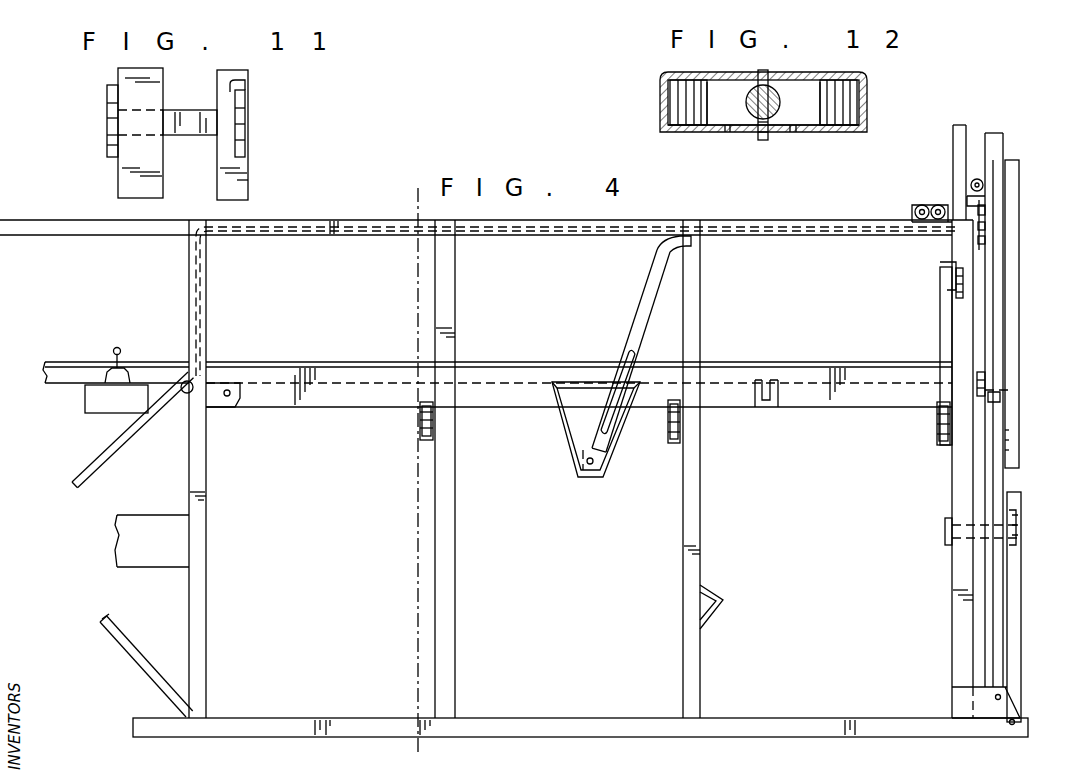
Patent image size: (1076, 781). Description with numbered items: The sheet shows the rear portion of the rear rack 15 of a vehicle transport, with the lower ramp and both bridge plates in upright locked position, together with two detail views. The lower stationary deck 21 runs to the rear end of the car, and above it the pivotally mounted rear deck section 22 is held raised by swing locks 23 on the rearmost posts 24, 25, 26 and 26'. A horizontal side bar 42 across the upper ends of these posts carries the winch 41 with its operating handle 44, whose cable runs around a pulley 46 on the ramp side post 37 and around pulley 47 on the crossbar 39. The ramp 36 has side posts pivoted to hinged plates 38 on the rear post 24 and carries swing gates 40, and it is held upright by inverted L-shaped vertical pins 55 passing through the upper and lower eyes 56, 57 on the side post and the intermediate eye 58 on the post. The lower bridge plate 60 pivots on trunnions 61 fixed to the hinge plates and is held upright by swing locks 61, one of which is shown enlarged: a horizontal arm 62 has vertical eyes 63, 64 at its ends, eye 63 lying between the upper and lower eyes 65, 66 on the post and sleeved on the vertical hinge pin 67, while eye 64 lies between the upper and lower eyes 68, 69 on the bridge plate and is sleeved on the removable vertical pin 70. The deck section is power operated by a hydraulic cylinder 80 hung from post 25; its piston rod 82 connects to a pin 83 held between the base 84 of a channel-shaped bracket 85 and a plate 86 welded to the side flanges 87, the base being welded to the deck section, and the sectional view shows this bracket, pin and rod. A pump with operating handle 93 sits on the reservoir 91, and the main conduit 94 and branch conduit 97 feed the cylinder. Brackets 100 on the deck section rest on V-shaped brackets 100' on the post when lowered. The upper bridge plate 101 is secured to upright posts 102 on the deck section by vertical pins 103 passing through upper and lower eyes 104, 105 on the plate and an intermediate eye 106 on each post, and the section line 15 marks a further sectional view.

In FIG. 4, the rear rack 15 is at (418, 185).
In FIG. 4, the lower stationary deck 21 is at (578, 712).
In FIG. 4, the rear deck section 22 is at (396, 402).
In FIG. 4, the swing lock 23 is at (420, 428).
In FIG. 11, the rear post 24 is at (130, 75).
In FIG. 4, the rear post 24 is at (958, 673).
In FIG. 4, the post 25 is at (718, 667).
In FIG. 4, the post 26 is at (464, 469).
In FIG. 4, the post 26' is at (217, 469).
In FIG. 4, the ramp 36 is at (984, 572).
In FIG. 4, the side post 37 is at (1000, 492).
In FIG. 4, the hinged plate 38 is at (965, 728).
In FIG. 4, the crossbar 39 is at (1002, 398).
In FIG. 4, the swing gate 40 is at (1019, 455).
In FIG. 4, the winch 41 is at (912, 215).
In FIG. 4, the horizontal side bar 42 is at (926, 232).
In FIG. 4, the operating handle 44 is at (918, 207).
In FIG. 4, the pulley 46 is at (977, 180).
In FIG. 4, the pulley 47 is at (986, 376).
In FIG. 4, the inverted L-shaped vertical pin 55 is at (971, 183).
In FIG. 4, the upper eye 56 is at (985, 219).
In FIG. 4, the lower eye 57 is at (985, 241).
In FIG. 4, the intermediate eye 58 is at (980, 228).
In FIG. 11, the bridge plate 60 is at (248, 82).
In FIG. 4, the bridge plate 60 is at (1020, 666).
In FIG. 11, the trunnion / swing lock 61 is at (186, 108).
In FIG. 4, the trunnion / swing lock 61 is at (965, 525).
In FIG. 11, the horizontal arm 62 is at (197, 136).
In FIG. 11, the vertical eye 63 is at (107, 121).
In FIG. 11, the vertical eye 64 is at (248, 125).
In FIG. 11, the upper eye 65 is at (107, 98).
In FIG. 11, the lower eye 66 is at (107, 148).
In FIG. 11, the vertical hinge pin 67 is at (113, 157).
In FIG. 11, the upper eye 68 is at (245, 101).
In FIG. 11, the lower eye 69 is at (245, 150).
In FIG. 11, the removable vertical pin 70 is at (232, 82).
In FIG. 4, the hydraulic cylinder 80 is at (638, 316).
In FIG. 12, the piston rod 82 is at (752, 112).
In FIG. 4, the piston rod 82 is at (588, 458).
In FIG. 12, the pin 83 is at (762, 140).
In FIG. 4, the pin 83 is at (578, 468).
In FIG. 12, the base 84 is at (697, 80).
In FIG. 4, the base 84 is at (531, 455).
In FIG. 12, the channel-shaped bracket 85 is at (663, 70).
In FIG. 4, the channel-shaped bracket 85 is at (615, 458).
In FIG. 12, the plate 86 is at (810, 128).
In FIG. 4, the plate 86 is at (593, 477).
In FIG. 12, the side flange 87 is at (660, 105).
In FIG. 4, the side flange 87 is at (624, 430).
In FIG. 4, the reservoir 91 is at (108, 412).
In FIG. 4, the operating handle 93 is at (115, 349).
In FIG. 4, the main conduit 94 is at (181, 380).
In FIG. 4, the branch conduit 97 is at (389, 231).
In FIG. 4, the bracket 100 is at (765, 408).
In FIG. 4, the V-shaped bracket 100' is at (734, 607).
In FIG. 4, the bridge plate 101 is at (960, 128).
In FIG. 4, the upright post 102 is at (945, 326).
In FIG. 4, the vertical pin 103 is at (940, 262).
In FIG. 4, the upper eye 104 is at (963, 275).
In FIG. 4, the lower eye 105 is at (963, 300).
In FIG. 4, the intermediate eye 106 is at (963, 288).